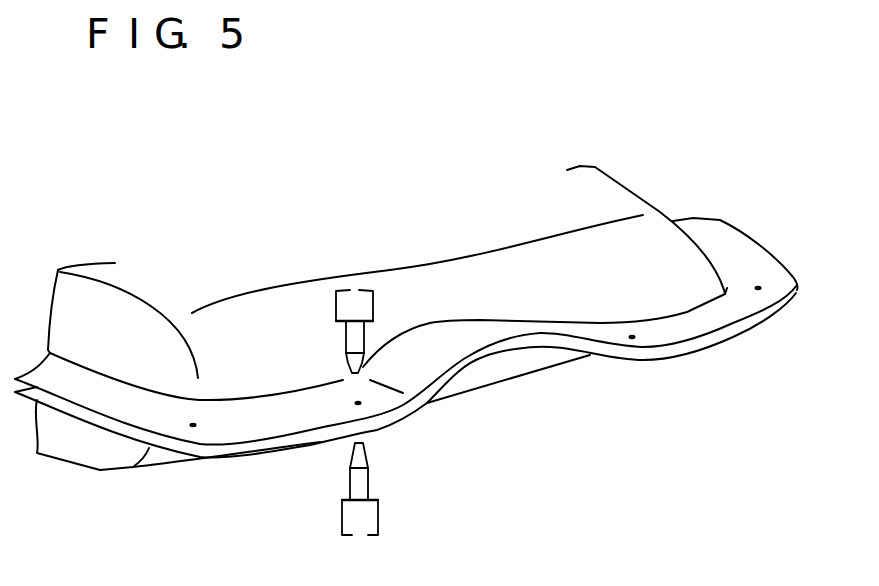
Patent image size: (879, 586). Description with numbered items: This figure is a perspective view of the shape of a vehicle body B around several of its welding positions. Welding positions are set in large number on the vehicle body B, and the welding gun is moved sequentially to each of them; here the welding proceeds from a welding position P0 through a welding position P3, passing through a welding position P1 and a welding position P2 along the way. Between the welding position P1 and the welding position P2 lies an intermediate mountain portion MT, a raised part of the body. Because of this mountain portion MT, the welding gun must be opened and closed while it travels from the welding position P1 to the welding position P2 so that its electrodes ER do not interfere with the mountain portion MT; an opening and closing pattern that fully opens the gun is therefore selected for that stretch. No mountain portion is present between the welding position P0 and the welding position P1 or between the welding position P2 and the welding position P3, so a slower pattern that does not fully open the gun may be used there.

The mountain portion MT is at (462, 337).
The vehicle body B is at (647, 265).
The electrodes ER is at (353, 305).
The welding position P0 is at (193, 425).
The welding position P1 is at (358, 403).
The welding position P2 is at (632, 337).
The welding position P3 is at (758, 288).